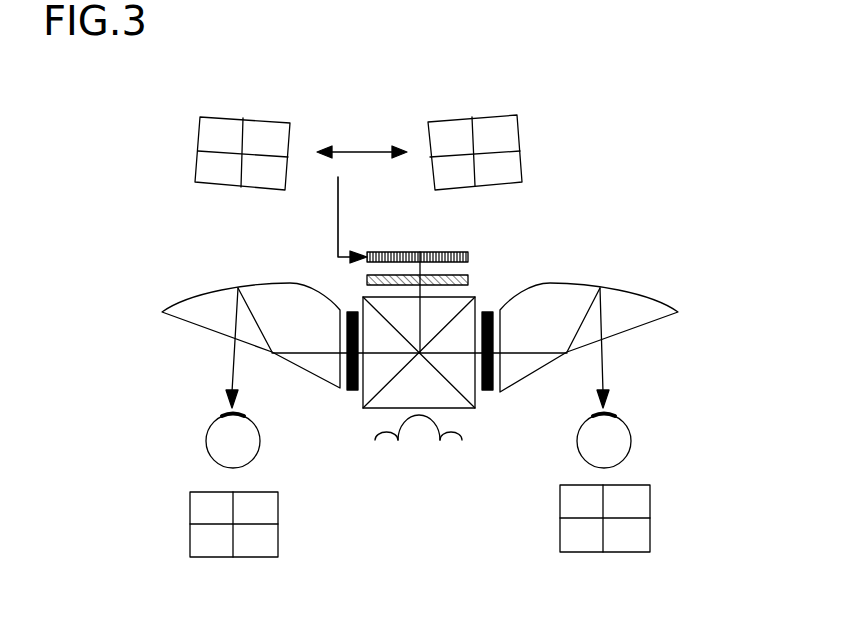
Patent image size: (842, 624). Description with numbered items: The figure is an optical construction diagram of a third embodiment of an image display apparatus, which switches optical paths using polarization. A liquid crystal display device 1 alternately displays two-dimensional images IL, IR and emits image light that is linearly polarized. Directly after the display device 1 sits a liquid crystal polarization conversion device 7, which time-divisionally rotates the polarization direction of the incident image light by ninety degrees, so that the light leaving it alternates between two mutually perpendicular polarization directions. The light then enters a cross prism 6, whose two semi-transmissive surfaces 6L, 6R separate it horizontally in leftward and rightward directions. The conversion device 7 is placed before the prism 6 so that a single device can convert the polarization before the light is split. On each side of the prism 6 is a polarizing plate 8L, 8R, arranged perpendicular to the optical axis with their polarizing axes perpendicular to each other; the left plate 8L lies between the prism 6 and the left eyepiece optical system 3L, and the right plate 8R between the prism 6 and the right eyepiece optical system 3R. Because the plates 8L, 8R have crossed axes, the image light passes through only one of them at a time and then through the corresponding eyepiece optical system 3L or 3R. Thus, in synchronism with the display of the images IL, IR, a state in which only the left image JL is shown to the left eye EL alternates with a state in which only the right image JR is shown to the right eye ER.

The liquid crystal display device 1 is at (470, 257).
The liquid crystal polarization conversion device 7 is at (365, 279).
The cross prism 6 is at (477, 302).
The semi-transmissive surface 6L is at (372, 406).
The semi-transmissive surface 6R is at (467, 408).
The polarizing plate 8L is at (350, 392).
The polarizing plate 8R is at (487, 394).
The eyepiece optical system 3L is at (212, 285).
The eyepiece optical system 3R is at (622, 284).
The left eye EL is at (206, 433).
The right eye ER is at (628, 431).
The two-dimensional image IL is at (200, 162).
The two-dimensional image IR is at (518, 155).
The left image JL is at (190, 535).
The right image JR is at (650, 532).